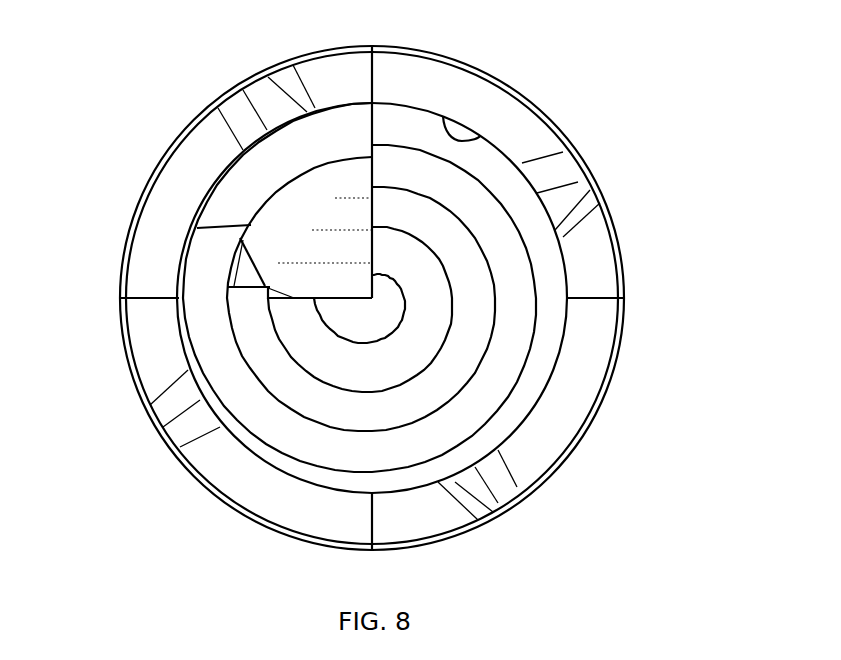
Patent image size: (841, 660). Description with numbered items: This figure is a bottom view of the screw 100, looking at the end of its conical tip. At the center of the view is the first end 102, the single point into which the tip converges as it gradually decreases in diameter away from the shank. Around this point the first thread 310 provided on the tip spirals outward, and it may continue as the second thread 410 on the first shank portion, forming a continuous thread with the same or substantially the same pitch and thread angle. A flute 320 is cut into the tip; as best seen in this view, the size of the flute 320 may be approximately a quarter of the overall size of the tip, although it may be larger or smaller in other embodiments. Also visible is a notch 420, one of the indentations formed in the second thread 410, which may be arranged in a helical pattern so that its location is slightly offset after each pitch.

The screw 100 is at (119, 102).
The first end 102 is at (372, 298).
The first thread 310 is at (513, 302).
The flute 320 is at (287, 245).
The second thread 410 is at (212, 353).
The notch 420 is at (478, 138).